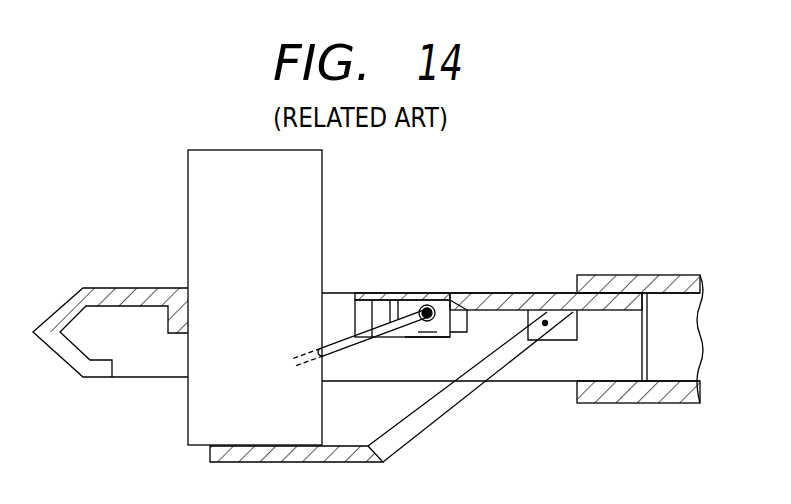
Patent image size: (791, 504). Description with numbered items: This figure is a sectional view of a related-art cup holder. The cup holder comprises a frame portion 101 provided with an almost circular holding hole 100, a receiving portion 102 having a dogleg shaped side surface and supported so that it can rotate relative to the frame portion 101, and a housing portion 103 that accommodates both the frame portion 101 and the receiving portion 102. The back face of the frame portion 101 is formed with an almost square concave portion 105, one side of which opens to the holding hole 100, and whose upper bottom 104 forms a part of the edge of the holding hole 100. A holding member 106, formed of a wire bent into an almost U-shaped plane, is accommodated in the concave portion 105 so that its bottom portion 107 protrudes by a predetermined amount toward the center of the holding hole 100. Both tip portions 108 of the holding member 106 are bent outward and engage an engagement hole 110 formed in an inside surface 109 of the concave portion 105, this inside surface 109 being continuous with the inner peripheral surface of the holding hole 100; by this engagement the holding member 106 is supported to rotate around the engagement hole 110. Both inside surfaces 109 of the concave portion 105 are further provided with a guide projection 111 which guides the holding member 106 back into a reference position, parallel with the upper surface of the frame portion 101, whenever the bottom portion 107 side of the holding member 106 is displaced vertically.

The holding hole 100 is at (188, 308).
The frame portion 101 is at (118, 288).
The receiving portion 102 is at (432, 420).
The housing portion 103 is at (607, 404).
The upper bottom 104 is at (412, 293).
The concave portion 105 is at (453, 293).
The holding member 106 is at (335, 338).
The bottom portion 107 is at (310, 363).
The tip portions 108 is at (430, 293).
The inside surface 109 is at (412, 352).
The engagement hole 110 is at (426, 333).
The guide projection 111 is at (377, 293).